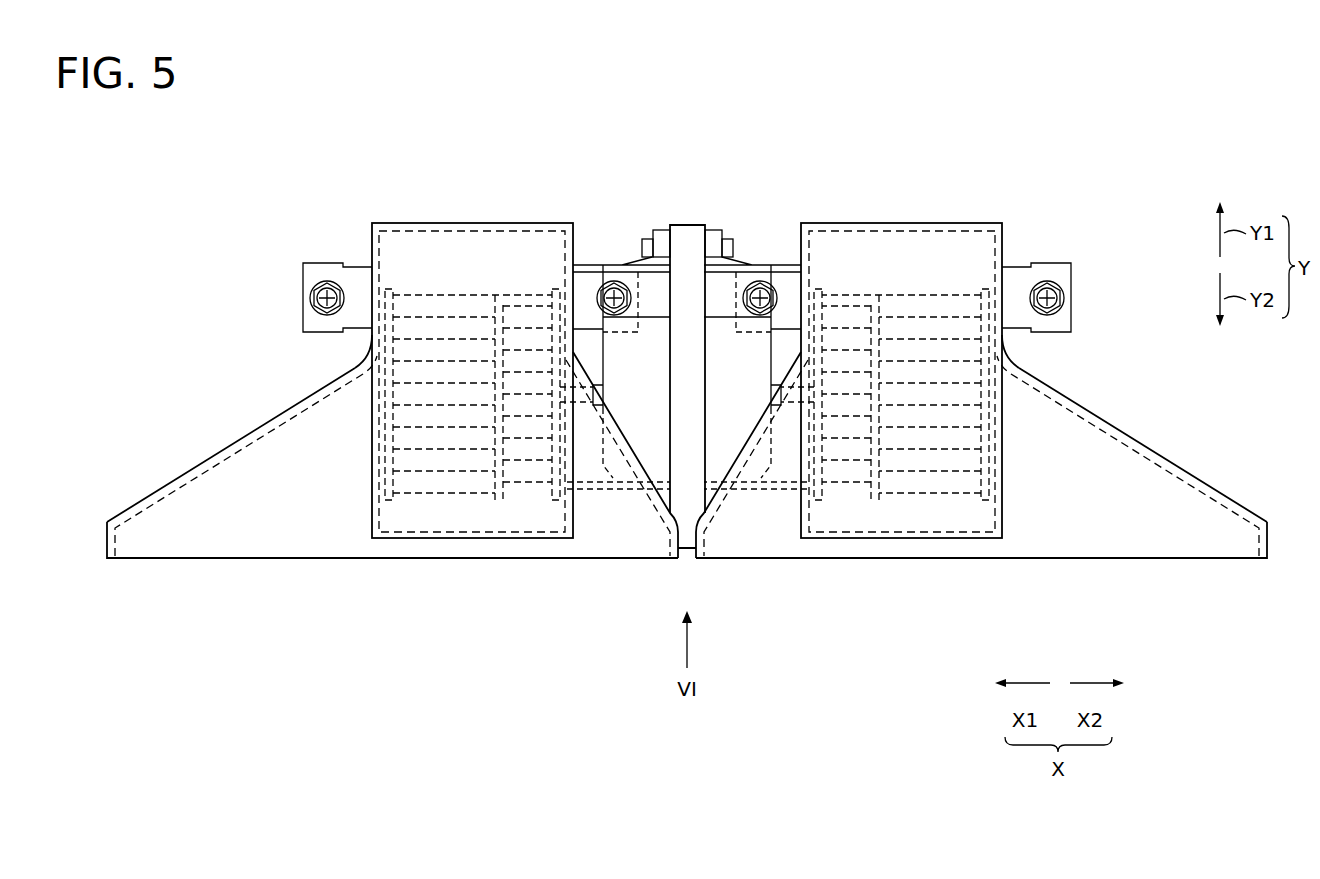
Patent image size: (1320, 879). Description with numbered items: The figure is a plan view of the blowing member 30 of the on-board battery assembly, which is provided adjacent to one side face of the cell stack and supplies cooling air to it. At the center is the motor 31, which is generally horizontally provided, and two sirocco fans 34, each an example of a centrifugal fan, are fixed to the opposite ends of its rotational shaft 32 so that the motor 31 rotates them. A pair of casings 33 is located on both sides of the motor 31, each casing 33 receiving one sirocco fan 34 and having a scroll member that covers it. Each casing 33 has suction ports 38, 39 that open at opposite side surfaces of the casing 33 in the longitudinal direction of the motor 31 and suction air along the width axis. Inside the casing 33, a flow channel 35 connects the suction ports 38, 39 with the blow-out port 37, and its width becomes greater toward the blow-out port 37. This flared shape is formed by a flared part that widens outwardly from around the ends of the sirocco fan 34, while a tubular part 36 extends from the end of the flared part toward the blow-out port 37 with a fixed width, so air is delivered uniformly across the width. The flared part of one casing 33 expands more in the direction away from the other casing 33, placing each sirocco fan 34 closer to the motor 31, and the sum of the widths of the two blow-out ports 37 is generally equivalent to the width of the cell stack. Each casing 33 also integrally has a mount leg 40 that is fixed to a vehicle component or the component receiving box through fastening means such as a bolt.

The blowing member 30 is at (1102, 405).
The motor 31 is at (720, 327).
The rotational shaft 32 is at (798, 345).
The casing 33 is at (444, 223).
The sirocco fan 34 is at (467, 500).
The flow channel 35 is at (213, 485).
The tubular part 36 is at (107, 545).
The blow-out port 37 is at (558, 559).
The suction port 38 is at (337, 373).
The suction port 39 is at (574, 342).
The mount leg 40 is at (310, 272).